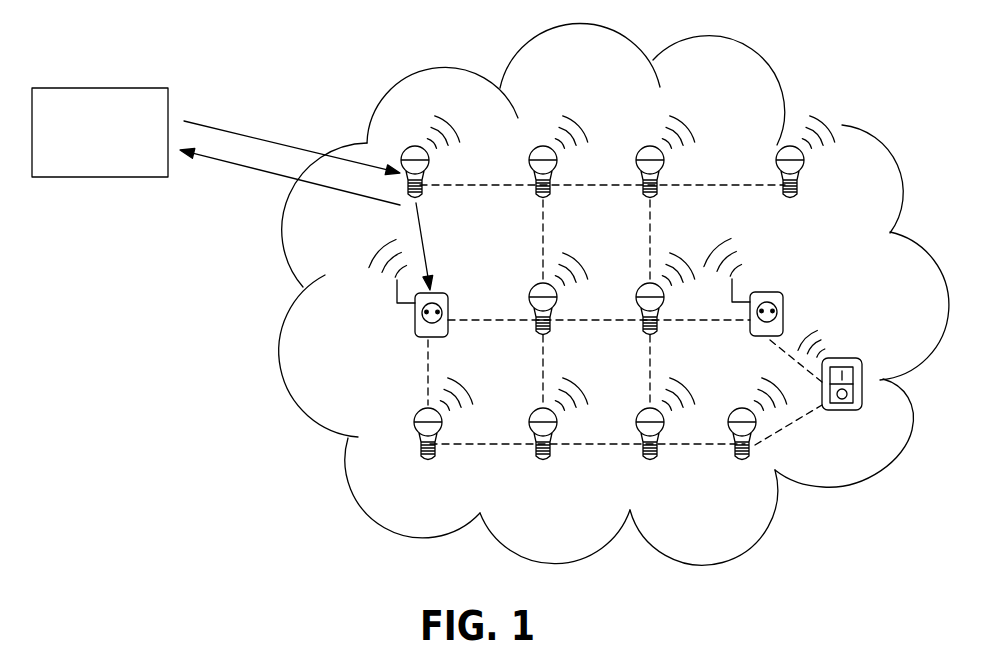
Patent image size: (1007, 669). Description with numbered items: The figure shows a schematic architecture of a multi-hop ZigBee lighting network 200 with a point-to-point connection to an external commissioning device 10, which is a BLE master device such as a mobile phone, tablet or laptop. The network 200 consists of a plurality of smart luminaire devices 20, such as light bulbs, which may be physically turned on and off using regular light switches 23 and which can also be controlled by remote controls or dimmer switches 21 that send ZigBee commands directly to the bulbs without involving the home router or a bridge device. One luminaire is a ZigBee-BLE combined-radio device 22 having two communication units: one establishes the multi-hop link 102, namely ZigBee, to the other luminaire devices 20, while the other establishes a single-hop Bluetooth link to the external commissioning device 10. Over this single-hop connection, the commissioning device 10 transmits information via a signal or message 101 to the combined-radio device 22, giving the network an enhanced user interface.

The external commissioning device 10 is at (100, 96).
The signal or message 101 is at (235, 130).
The multi-hop link 102 is at (419, 224).
The smart luminaire device 20 is at (601, 314).
The remote control or dimmer switch 21 is at (424, 328).
The ZigBee-BLE combined-radio device 22 is at (415, 147).
The light switch 23 is at (862, 385).
The multi-hop ZigBee lighting network 200 is at (748, 515).